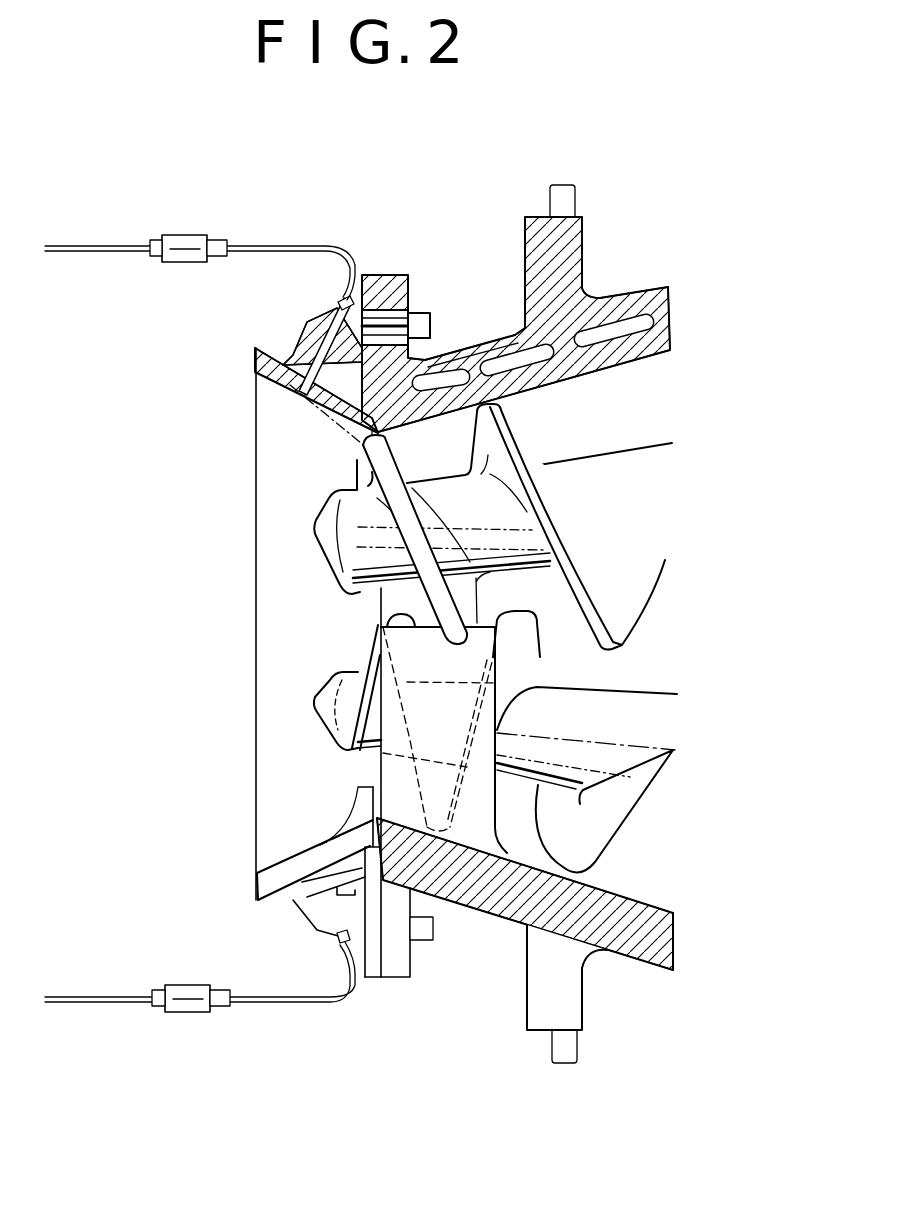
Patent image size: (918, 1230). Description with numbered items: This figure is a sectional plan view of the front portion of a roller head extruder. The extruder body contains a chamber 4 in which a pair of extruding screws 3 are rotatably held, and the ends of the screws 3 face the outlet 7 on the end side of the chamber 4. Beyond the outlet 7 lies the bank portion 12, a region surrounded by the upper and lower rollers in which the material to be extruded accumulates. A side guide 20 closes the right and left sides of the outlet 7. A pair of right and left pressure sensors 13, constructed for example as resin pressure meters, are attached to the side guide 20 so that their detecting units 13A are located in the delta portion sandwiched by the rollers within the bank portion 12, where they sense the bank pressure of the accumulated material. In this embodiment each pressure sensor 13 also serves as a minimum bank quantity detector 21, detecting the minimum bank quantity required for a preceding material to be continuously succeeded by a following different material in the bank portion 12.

The extruding screws 3 is at (635, 589).
The chamber 4 is at (626, 294).
The outlet 7 is at (380, 610).
The bank portion 12 is at (270, 482).
The pressure sensors 13 is at (200, 623).
The detecting units 13A is at (300, 396).
The side guide 20 is at (255, 358).
The minimum bank quantity detectors 21 is at (303, 330).